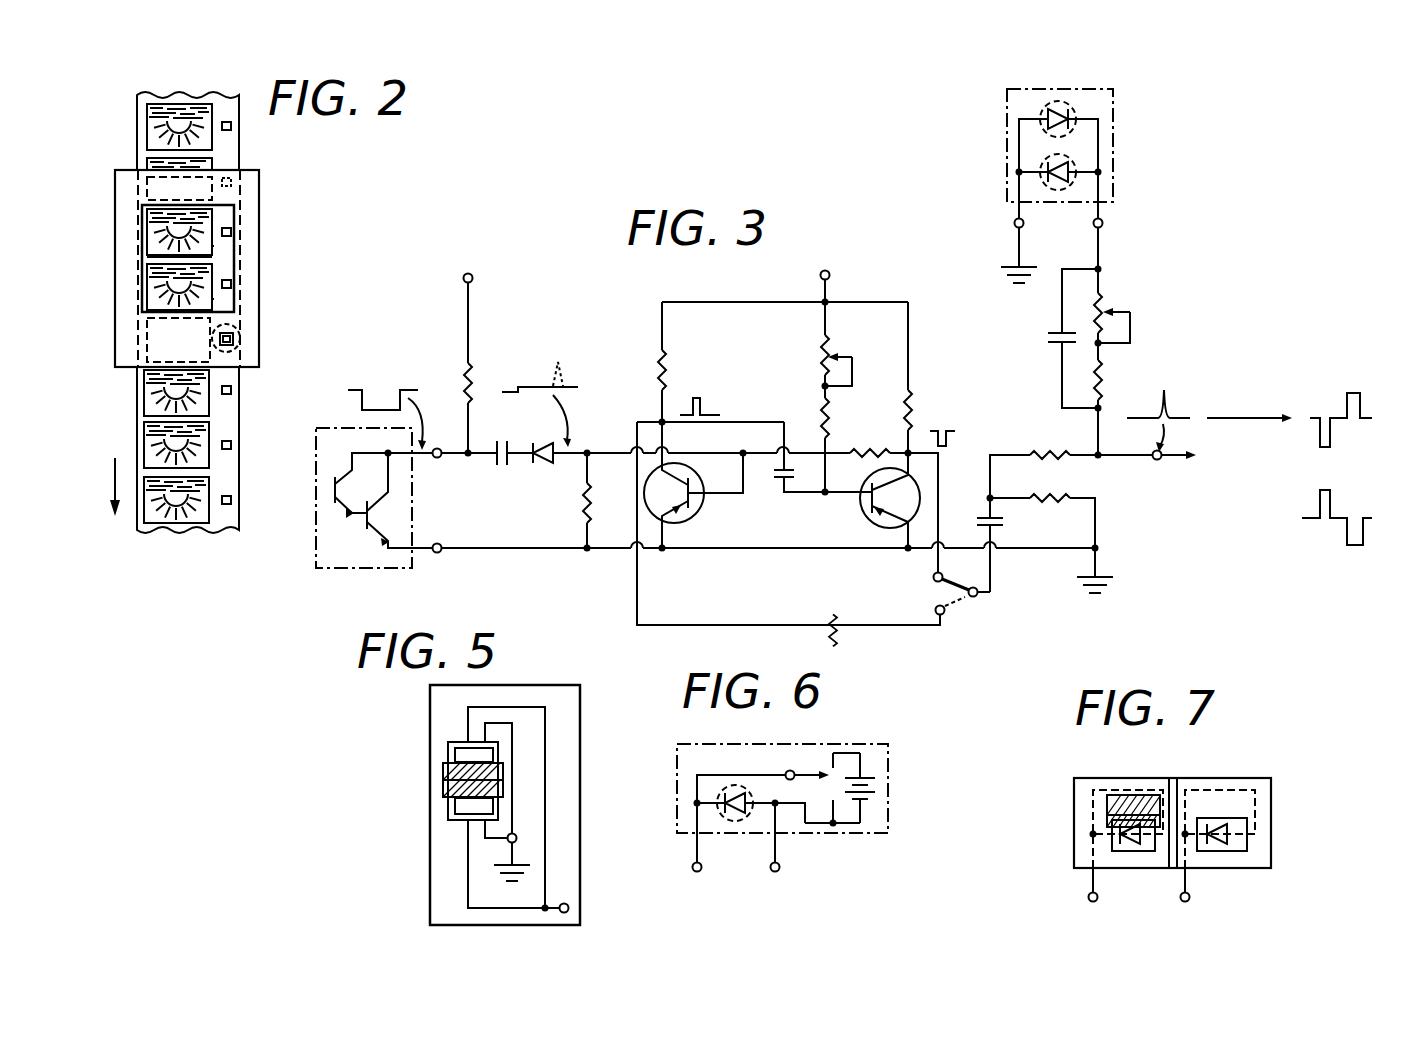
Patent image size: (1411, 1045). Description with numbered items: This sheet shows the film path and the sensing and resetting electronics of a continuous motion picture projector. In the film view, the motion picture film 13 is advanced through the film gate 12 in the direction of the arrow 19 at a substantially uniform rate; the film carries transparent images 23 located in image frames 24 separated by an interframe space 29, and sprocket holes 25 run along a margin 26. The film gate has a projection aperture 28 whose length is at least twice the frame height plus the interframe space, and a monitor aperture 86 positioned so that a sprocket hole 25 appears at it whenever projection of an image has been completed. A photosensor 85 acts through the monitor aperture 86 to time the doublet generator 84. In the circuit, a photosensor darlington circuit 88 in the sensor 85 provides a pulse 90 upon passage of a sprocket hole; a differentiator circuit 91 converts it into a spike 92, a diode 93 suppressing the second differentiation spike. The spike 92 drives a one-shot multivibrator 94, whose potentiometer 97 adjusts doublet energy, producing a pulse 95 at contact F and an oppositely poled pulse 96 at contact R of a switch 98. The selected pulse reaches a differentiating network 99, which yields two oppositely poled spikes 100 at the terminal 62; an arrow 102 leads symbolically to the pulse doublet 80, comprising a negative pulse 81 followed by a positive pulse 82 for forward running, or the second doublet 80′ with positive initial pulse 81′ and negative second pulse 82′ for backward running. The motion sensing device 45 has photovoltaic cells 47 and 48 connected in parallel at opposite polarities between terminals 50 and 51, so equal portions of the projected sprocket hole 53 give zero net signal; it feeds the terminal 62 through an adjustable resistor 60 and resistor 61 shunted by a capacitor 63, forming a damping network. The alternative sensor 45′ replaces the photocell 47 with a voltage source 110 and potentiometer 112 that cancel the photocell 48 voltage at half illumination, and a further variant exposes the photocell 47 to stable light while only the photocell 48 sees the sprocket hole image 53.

In FIG. 2, the film gate 12 is at (115, 358).
In FIG. 2, the motion picture film 13 is at (137, 148).
In FIG. 2, the arrow 19 is at (114, 487).
In FIG. 2, the transparent images 23 is at (147, 230).
In FIG. 2, the image frames 24 is at (212, 247).
In FIG. 2, the sprocket holes 25 is at (232, 445).
In FIG. 2, the margin 26 is at (240, 150).
In FIG. 2, the projection aperture 28 is at (146, 252).
In FIG. 2, the interframe space 29 is at (212, 258).
In FIG. 3, the motion sensing device 45 is at (1007, 146).
In FIG. 5, the motion sensing device 45 is at (430, 858).
In FIG. 6, the image motion sensor 45′ is at (677, 776).
In FIG. 3, the photovoltaic cell 47 is at (1073, 108).
In FIG. 5, the photovoltaic cell 47 is at (448, 752).
In FIG. 7, the photovoltaic cell 47 is at (1245, 842).
In FIG. 3, the photovoltaic cell 48 is at (1075, 160).
In FIG. 5, the photovoltaic cell 48 is at (448, 810).
In FIG. 6, the photovoltaic cell 48 is at (740, 822).
In FIG. 7, the photovoltaic cell 48 is at (1127, 851).
In FIG. 3, the terminal 50 is at (1014, 223).
In FIG. 5, the terminal 50 is at (518, 836).
In FIG. 6, the terminal 50 is at (697, 872).
In FIG. 7, the terminal 50 is at (1088, 897).
In FIG. 3, the terminal 51 is at (1103, 222).
In FIG. 5, the terminal 51 is at (569, 905).
In FIG. 6, the terminal 51 is at (780, 865).
In FIG. 7, the terminal 51 is at (1190, 897).
In FIG. 5, the projected sprocket hole 53 is at (443, 780).
In FIG. 7, the projected sprocket hole 53 is at (1130, 800).
In FIG. 3, the resistor 60 is at (1103, 300).
In FIG. 3, the resistor 61 is at (1103, 376).
In FIG. 3, the terminal 62 is at (1153, 462).
In FIG. 3, the capacitor 63 is at (1052, 332).
In FIG. 3, the pulse doublet 80 is at (1324, 408).
In FIG. 3, the second pulse doublet 80′ is at (1322, 537).
In FIG. 3, the negative pulse 81 is at (1318, 440).
In FIG. 3, the initial pulse 81′ is at (1309, 514).
In FIG. 3, the positive pulse 82 is at (1347, 398).
In FIG. 3, the second pulse 82′ is at (1356, 545).
In FIG. 3, the doublet generator 84 is at (622, 340).
In FIG. 2, the photosensor 85 is at (240, 352).
In FIG. 3, the photosensor 85 is at (374, 483).
In FIG. 2, the monitor aperture 86 is at (233, 336).
In FIG. 3, the photosensor darlington circuit 88 is at (366, 430).
In FIG. 3, the pulse 90 is at (365, 388).
In FIG. 3, the differentiator circuit 91 is at (543, 497).
In FIG. 3, the spike 92 is at (520, 410).
In FIG. 3, the diode 93 is at (540, 468).
In FIG. 3, the one-shot multivibrator 94 is at (863, 457).
In FIG. 3, the pulse 95 is at (948, 436).
In FIG. 3, the pulse 96 is at (703, 410).
In FIG. 3, the potentiometer 97 is at (823, 351).
In FIG. 3, the switch 98 is at (967, 600).
In FIG. 3, the differentiating network 99 is at (1085, 545).
In FIG. 3, the spikes 100 is at (1154, 390).
In FIG. 3, the arrow 102 is at (1275, 412).
In FIG. 6, the voltage source 110 is at (880, 786).
In FIG. 6, the potentiometer 112 is at (836, 762).